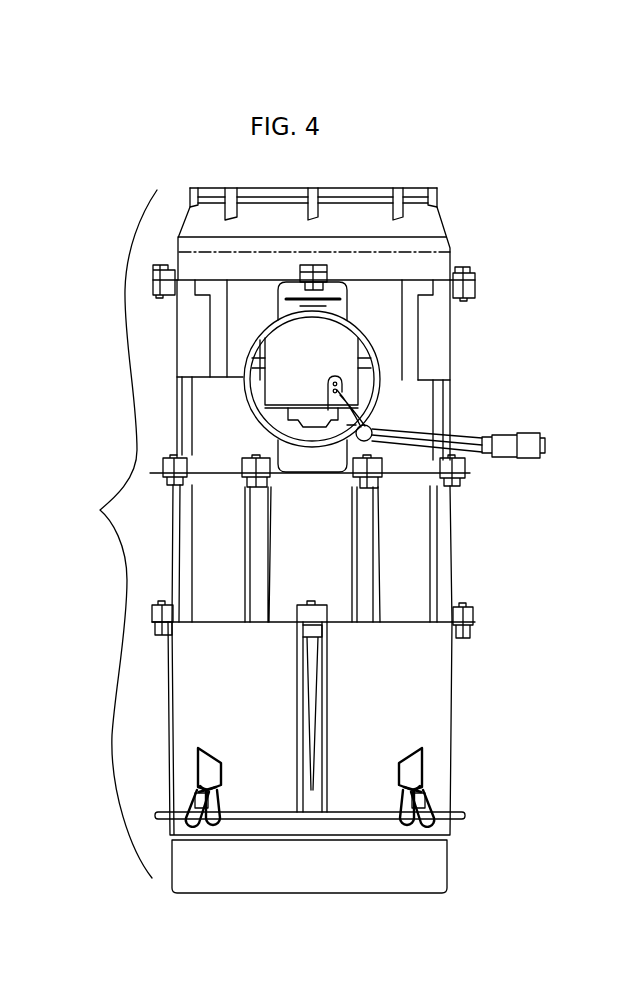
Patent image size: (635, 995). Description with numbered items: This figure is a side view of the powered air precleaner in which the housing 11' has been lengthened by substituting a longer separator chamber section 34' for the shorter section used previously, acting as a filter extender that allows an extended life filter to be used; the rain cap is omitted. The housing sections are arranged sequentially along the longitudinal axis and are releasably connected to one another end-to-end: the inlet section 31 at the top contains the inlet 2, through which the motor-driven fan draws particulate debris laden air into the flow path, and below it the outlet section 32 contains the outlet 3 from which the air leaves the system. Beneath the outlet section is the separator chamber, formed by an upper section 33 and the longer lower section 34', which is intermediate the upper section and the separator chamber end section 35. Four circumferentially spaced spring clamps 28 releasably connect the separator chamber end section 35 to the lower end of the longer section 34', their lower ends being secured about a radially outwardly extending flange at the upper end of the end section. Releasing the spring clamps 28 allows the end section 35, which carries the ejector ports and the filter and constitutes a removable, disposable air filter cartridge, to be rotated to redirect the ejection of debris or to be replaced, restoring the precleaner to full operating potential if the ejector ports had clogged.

The inlet 2 is at (378, 188).
The inlet section 31 is at (443, 222).
The outlet 3 is at (377, 347).
The outlet section 32 is at (453, 370).
The upper section of the separator chamber 33 is at (447, 565).
The longer separator chamber section 34' is at (352, 718).
The spring clamps 28 is at (437, 803).
The separator chamber end section 35 is at (447, 873).
The housing 11' is at (103, 534).